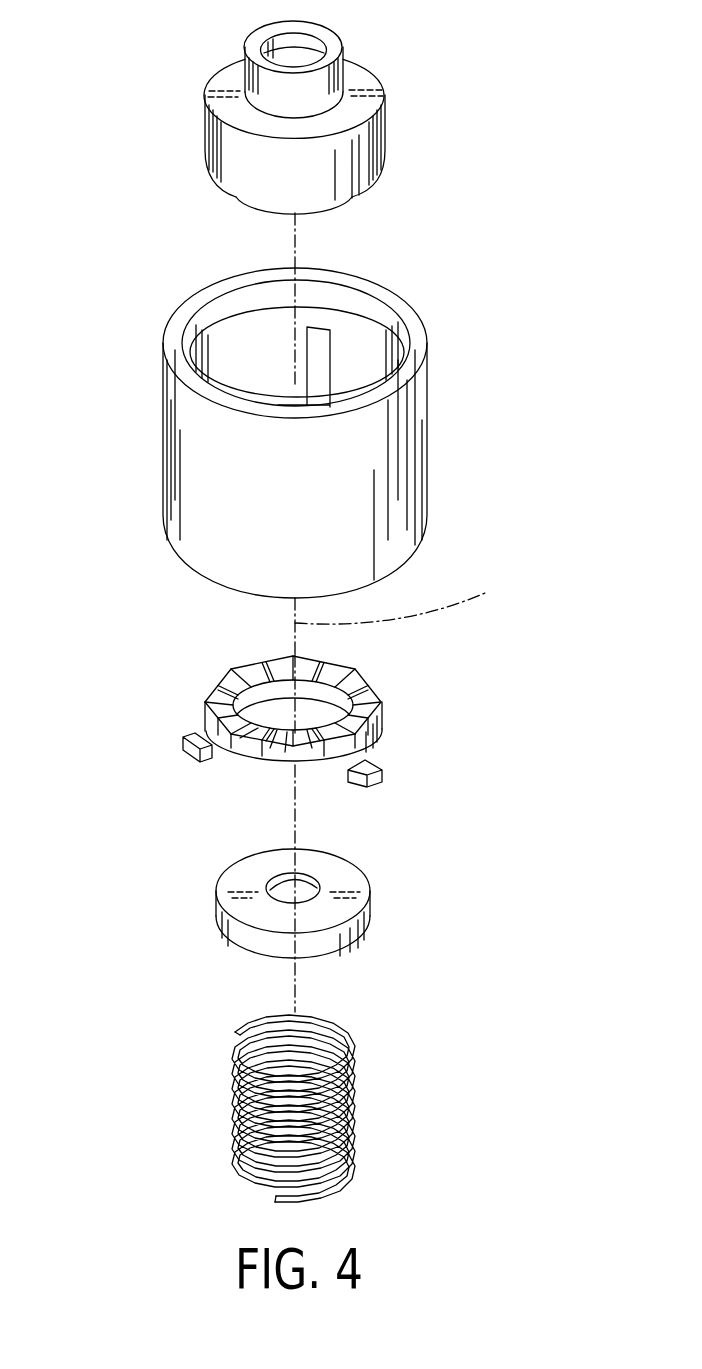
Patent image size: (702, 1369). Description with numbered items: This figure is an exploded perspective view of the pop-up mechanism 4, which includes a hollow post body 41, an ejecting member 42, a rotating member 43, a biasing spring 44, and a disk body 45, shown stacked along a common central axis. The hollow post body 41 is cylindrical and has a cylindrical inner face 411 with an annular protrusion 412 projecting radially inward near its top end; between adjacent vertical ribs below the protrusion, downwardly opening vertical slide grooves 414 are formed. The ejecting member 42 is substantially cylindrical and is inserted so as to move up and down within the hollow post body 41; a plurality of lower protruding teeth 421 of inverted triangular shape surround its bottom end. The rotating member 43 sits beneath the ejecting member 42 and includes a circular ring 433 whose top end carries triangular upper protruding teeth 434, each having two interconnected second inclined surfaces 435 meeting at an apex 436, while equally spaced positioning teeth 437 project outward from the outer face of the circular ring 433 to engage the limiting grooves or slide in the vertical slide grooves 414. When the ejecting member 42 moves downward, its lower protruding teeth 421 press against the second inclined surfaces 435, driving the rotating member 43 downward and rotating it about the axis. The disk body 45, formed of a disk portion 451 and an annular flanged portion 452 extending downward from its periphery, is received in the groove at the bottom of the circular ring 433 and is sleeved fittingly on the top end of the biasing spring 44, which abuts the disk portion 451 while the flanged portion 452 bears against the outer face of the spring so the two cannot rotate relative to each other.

The pop-up mechanism 4 is at (160, 190).
The ejecting member 42 is at (383, 68).
The lower protruding teeth 421 is at (356, 197).
The hollow post body 41 is at (445, 397).
The cylindrical inner face 411 is at (210, 310).
The annular protrusion 412 is at (316, 321).
The vertical slide groove 414 is at (318, 353).
The rotating member 43 is at (175, 710).
The circular ring 433 is at (381, 752).
The upper protruding teeth 434 is at (252, 743).
The second inclined surfaces 435 is at (277, 752).
The apex 436 is at (285, 754).
The positioning teeth 437 is at (382, 785).
The disk body 45 is at (372, 905).
The disk portion 451 is at (342, 883).
The annular flanged portion 452 is at (340, 935).
The biasing spring 44 is at (356, 1114).